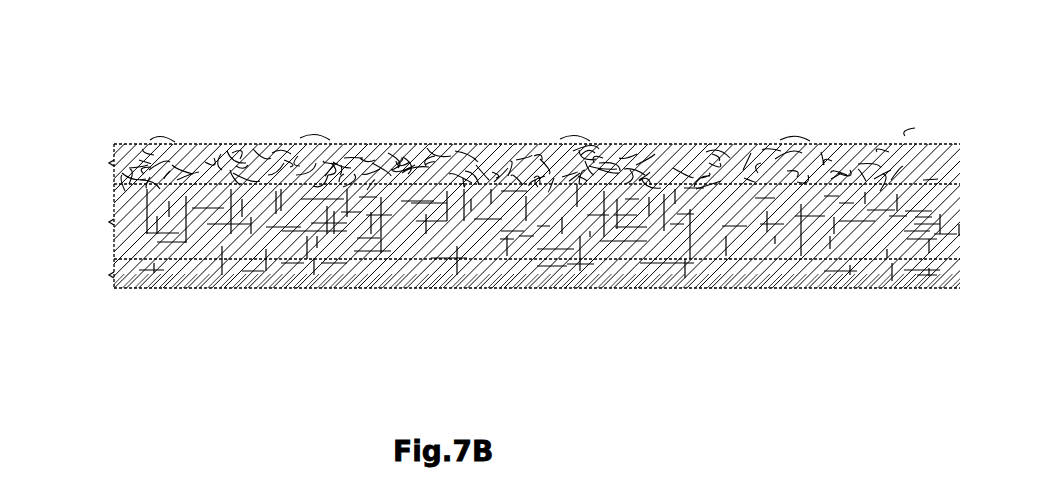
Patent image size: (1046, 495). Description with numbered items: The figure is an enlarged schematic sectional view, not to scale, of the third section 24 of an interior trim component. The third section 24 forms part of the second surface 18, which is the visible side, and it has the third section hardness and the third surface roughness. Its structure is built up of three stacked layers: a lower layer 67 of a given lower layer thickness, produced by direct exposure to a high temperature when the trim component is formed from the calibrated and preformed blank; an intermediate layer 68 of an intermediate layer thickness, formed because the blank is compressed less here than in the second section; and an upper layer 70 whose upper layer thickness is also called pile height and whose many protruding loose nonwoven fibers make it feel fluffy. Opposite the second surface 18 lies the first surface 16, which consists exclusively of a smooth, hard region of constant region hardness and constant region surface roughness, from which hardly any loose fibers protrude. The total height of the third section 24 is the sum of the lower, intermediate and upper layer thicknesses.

The second surface 18 is at (523, 195).
The third section 24 is at (523, 248).
The upper layer 70 is at (490, 160).
The intermediate layer 68 is at (501, 221).
The lower layer 67 is at (506, 274).
The first surface 16 is at (537, 328).